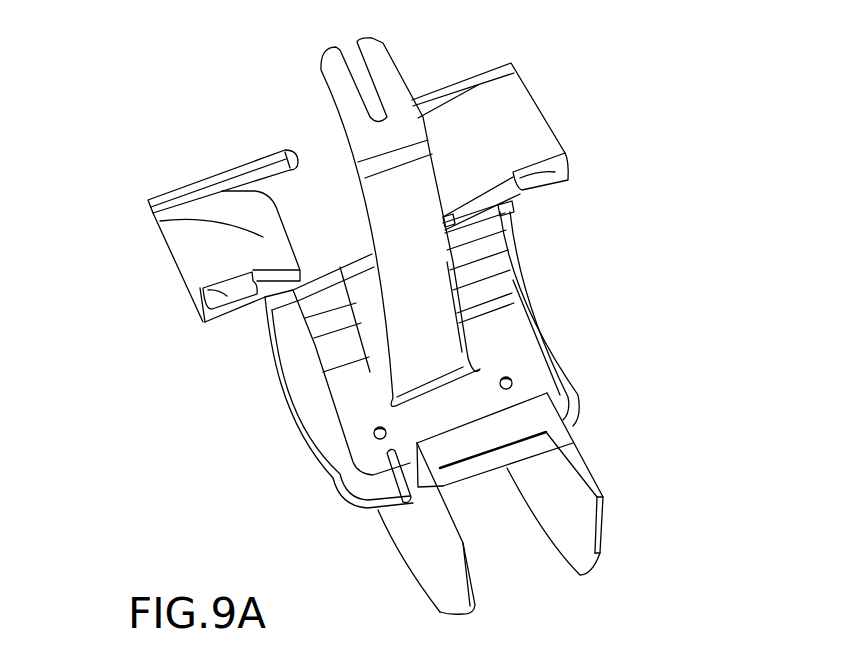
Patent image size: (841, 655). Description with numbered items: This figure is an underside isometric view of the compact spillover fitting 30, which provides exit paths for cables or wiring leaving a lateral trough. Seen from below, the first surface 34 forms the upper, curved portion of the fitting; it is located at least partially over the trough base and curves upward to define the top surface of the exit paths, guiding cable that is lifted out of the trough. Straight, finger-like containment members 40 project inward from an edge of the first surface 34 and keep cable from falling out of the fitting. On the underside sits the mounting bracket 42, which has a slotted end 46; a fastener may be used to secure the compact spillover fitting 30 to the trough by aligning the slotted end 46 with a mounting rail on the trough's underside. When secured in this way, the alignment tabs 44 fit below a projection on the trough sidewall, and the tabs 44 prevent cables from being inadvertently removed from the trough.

The compact spillover fitting 30 is at (603, 432).
The first surface 34 is at (160, 221).
The containment member 40 is at (268, 153).
The mounting bracket 42 is at (357, 403).
The alignment tab 44 is at (218, 292).
The slotted end 46 is at (332, 72).